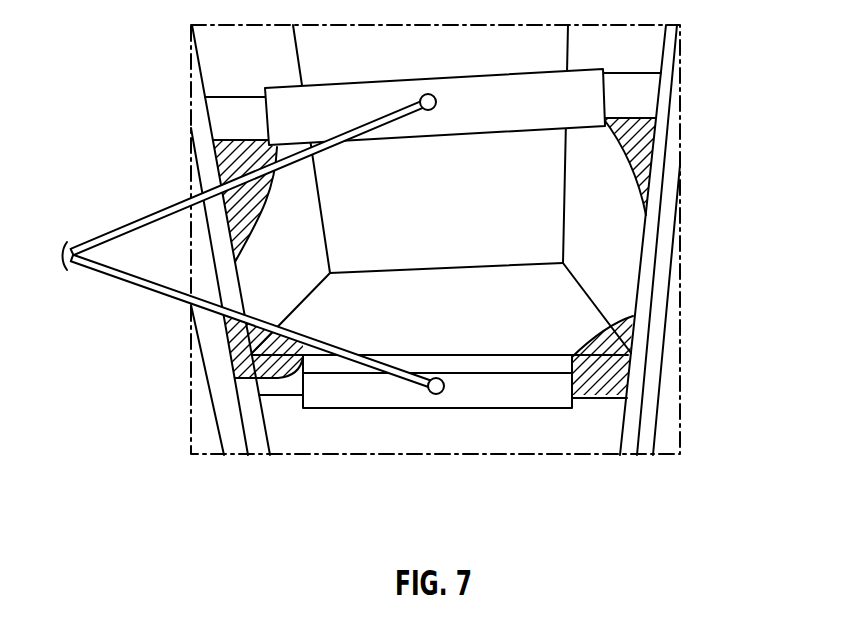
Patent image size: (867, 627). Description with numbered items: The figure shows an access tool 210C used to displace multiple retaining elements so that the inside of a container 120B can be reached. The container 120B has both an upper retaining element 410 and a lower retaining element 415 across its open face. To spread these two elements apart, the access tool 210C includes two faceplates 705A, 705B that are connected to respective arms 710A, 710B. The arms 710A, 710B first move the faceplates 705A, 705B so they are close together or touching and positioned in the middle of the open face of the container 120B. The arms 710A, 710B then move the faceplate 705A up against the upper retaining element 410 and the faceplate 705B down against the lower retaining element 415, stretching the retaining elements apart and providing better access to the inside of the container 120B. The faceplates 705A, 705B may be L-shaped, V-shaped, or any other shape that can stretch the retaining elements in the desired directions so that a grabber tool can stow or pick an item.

The faceplate 705A is at (265, 120).
The arm 710A is at (128, 225).
The arm 710B is at (133, 284).
The access tool 210C is at (231, 283).
The upper retaining element 410 is at (640, 160).
The container 120B is at (612, 270).
The lower retaining element 415 is at (602, 398).
The faceplate 705B is at (475, 410).